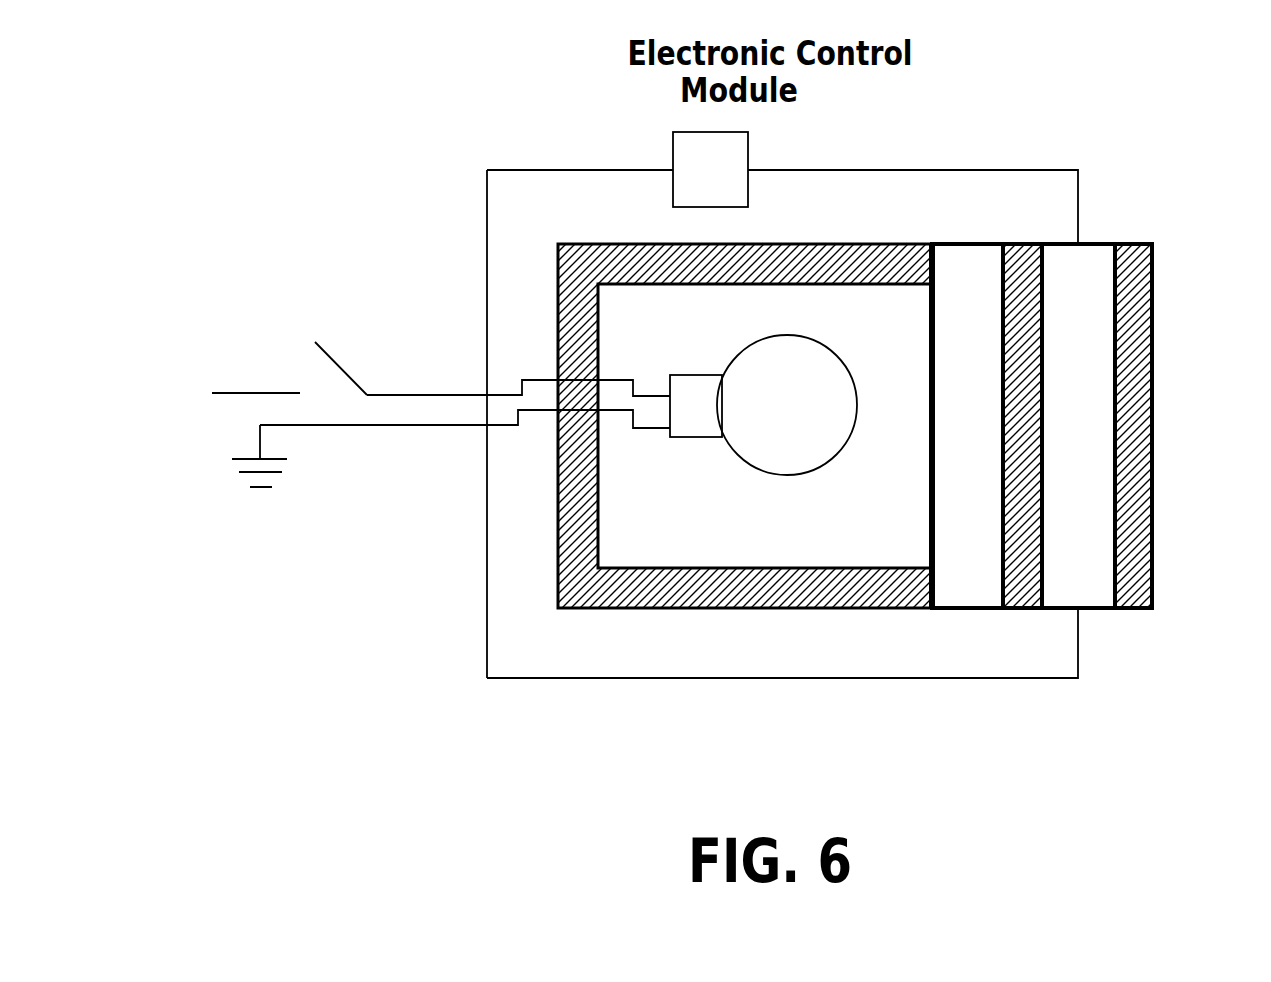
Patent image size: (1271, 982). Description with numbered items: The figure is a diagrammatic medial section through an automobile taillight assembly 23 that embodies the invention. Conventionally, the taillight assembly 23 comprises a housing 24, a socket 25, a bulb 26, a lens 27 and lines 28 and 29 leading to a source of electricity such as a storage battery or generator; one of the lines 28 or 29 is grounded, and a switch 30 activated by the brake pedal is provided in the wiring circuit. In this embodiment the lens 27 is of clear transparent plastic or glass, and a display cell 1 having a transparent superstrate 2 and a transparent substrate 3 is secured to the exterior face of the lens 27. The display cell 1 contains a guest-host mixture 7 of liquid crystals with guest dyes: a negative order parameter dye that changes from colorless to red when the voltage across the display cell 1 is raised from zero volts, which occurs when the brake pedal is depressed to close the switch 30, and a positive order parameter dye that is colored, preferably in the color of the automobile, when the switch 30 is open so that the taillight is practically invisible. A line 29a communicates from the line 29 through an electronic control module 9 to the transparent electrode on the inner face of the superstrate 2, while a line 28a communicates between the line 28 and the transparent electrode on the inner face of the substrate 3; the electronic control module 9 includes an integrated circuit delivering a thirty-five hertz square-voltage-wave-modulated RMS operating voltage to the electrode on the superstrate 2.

The display cell 1 is at (1090, 507).
The transparent superstrate 2 is at (1135, 608).
The transparent substrate 3 is at (1023, 608).
The guest-host mixture 7 is at (1093, 608).
The electronic control module 9 is at (673, 138).
The automobile taillight assembly 23 is at (976, 170).
The housing 24 is at (847, 244).
The socket 25 is at (696, 437).
The bulb 26 is at (768, 475).
The lens 27 is at (930, 323).
The line 28 is at (378, 425).
The line 28a is at (487, 653).
The line 29 is at (434, 395).
The line 29a is at (488, 188).
The switch 30 is at (351, 378).